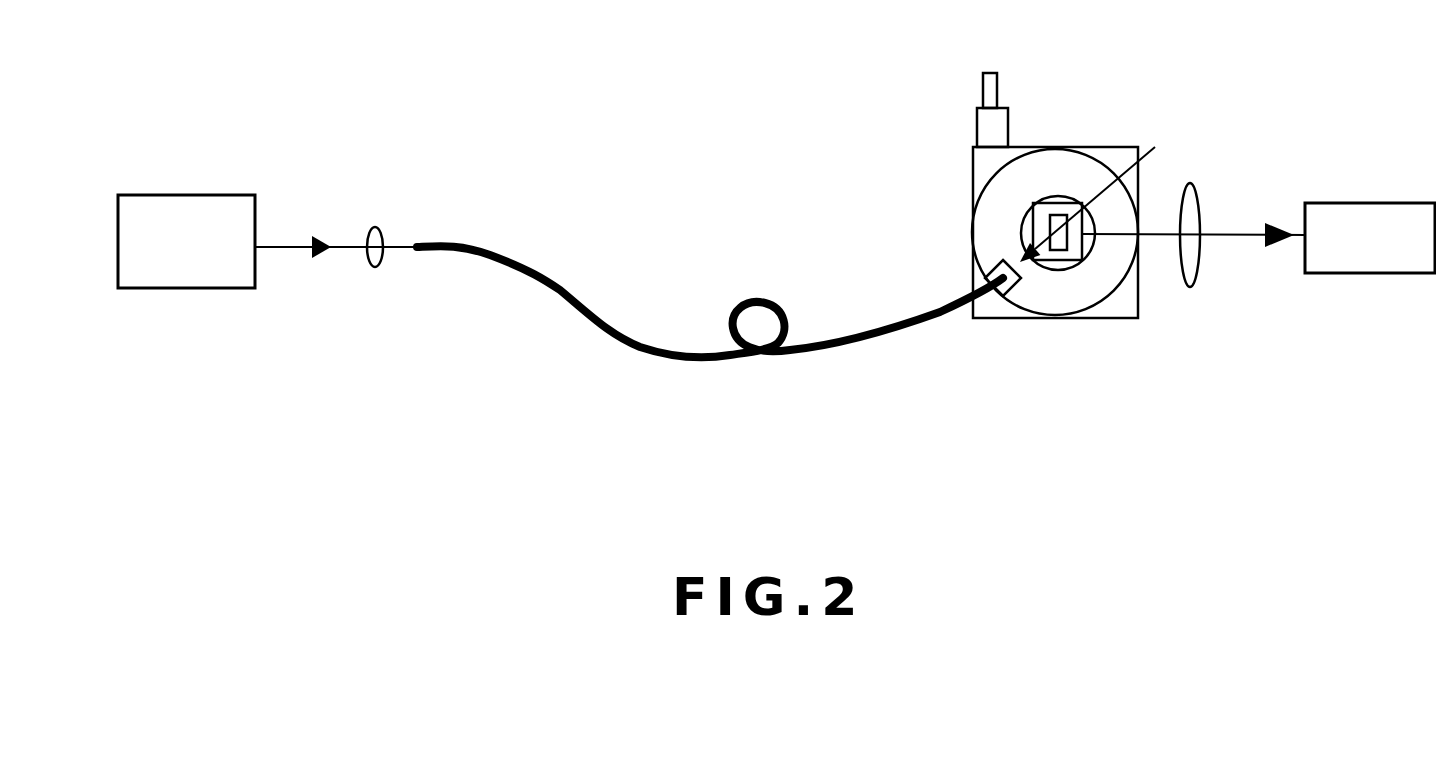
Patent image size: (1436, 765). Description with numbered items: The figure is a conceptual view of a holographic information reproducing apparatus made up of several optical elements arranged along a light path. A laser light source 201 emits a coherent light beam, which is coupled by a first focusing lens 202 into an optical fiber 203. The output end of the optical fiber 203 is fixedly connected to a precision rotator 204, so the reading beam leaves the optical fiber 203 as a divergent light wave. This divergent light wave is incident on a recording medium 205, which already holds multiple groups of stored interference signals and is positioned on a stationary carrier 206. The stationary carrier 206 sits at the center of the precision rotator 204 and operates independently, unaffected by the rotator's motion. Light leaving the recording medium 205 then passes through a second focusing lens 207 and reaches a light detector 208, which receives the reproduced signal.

The laser light source 201 is at (206, 195).
The first focusing lens 202 is at (372, 268).
The optical fiber 203 is at (653, 358).
The precision rotator 204 is at (1032, 300).
The recording medium 205 is at (1058, 212).
The stationary carrier 206 is at (1068, 205).
The second focusing lens 207 is at (1190, 182).
The light detector 208 is at (1375, 203).